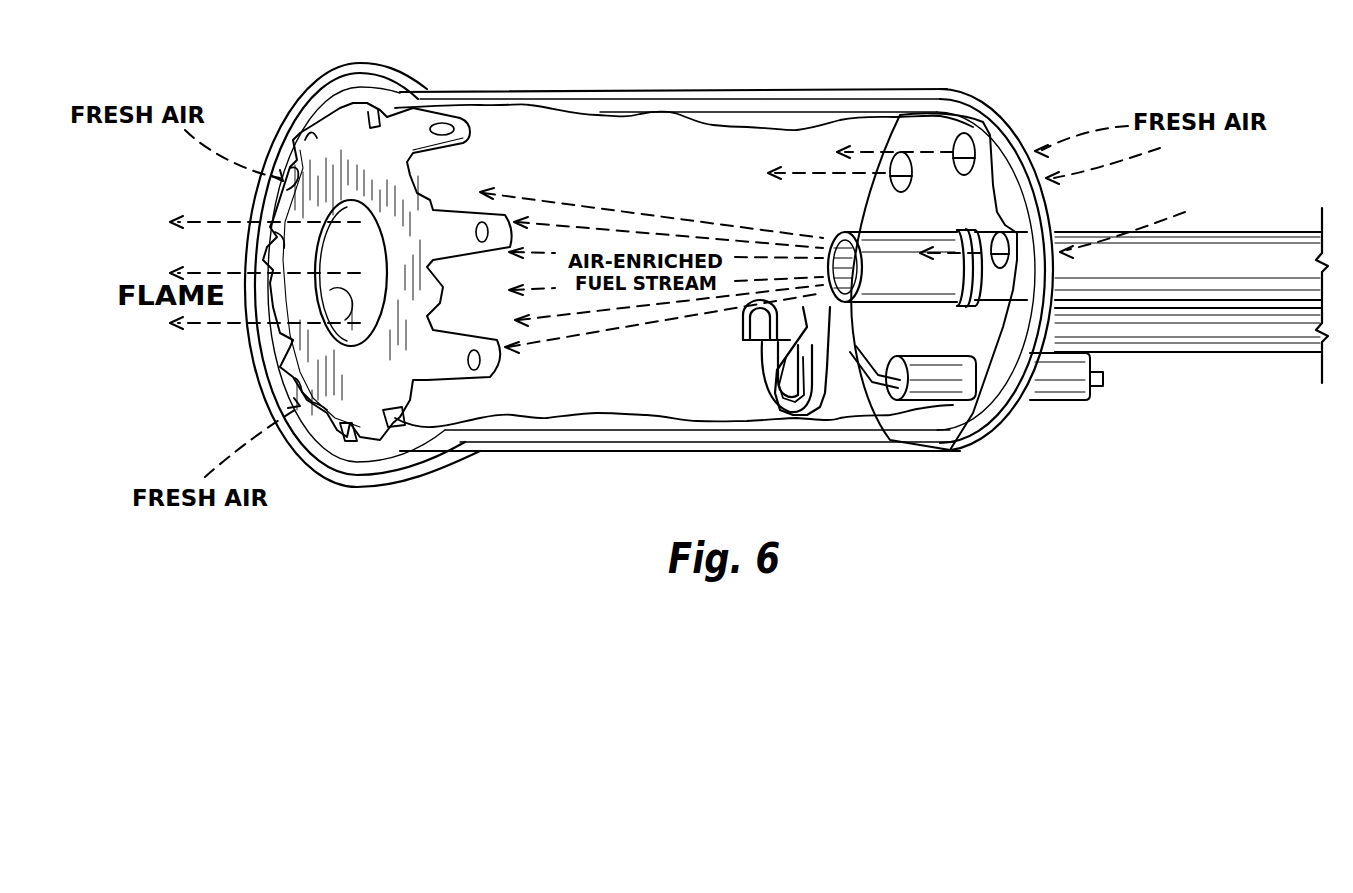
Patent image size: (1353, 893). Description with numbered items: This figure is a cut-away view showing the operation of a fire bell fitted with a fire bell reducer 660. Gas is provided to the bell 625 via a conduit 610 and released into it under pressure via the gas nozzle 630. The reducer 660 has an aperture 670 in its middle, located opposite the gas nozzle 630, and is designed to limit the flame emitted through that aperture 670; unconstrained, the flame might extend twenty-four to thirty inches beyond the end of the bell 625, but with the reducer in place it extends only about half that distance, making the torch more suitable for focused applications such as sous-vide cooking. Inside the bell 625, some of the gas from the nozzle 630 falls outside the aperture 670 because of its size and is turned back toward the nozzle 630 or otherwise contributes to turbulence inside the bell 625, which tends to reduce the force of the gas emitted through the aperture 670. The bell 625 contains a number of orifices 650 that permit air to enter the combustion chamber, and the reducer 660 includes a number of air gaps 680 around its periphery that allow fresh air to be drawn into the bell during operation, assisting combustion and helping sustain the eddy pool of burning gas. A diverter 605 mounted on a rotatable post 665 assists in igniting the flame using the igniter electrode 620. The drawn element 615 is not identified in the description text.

The diverter 605 is at (778, 390).
The conduit 610 is at (1230, 237).
The air supply pipe 615 is at (1185, 345).
The igniter electrode 620 is at (925, 390).
The bell 625 is at (643, 447).
The gas nozzle 630 is at (878, 237).
The orifices 650 is at (900, 152).
The fire bell reducer 660 is at (300, 346).
The rotatable post 665 is at (838, 340).
The aperture 670 is at (312, 268).
The air gaps 680 is at (288, 168).